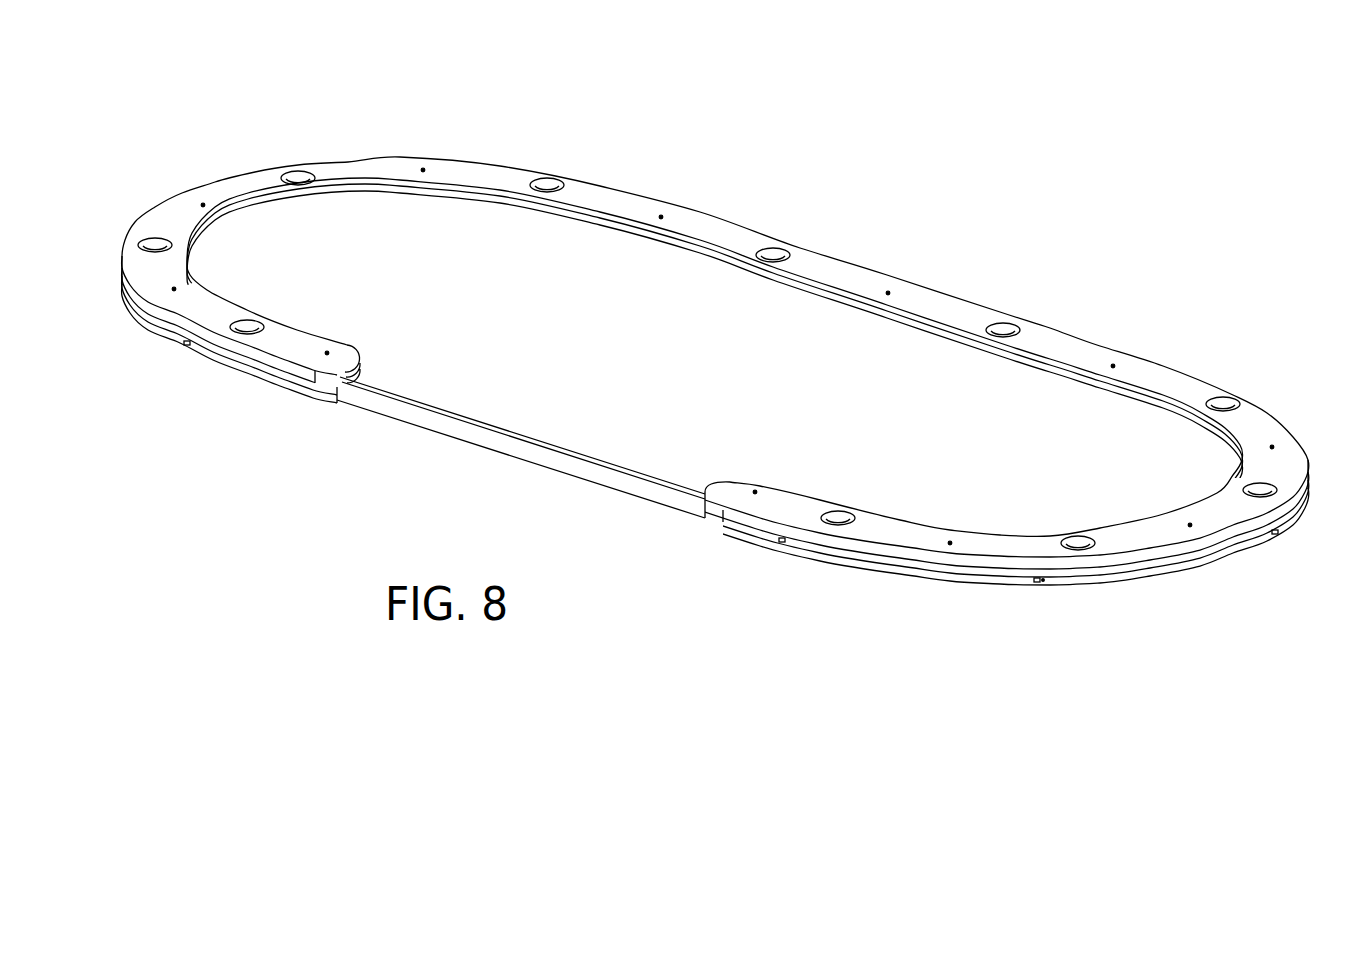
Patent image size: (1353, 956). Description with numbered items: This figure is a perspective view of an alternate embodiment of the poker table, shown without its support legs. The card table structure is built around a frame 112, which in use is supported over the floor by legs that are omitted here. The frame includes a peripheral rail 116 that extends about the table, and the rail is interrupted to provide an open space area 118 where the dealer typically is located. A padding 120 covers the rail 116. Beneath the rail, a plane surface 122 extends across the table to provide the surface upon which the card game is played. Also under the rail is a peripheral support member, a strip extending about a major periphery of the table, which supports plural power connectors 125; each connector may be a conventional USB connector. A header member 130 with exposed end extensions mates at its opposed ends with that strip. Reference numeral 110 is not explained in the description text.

The frame assembly 110 is at (694, 195).
The frame 112 is at (924, 600).
The peripheral rail 116 is at (1169, 366).
The open space area 118 is at (532, 427).
The padding 120 is at (481, 156).
The plane surface 122 is at (678, 370).
The power connector 125 is at (187, 346).
The header member 130 is at (385, 436).